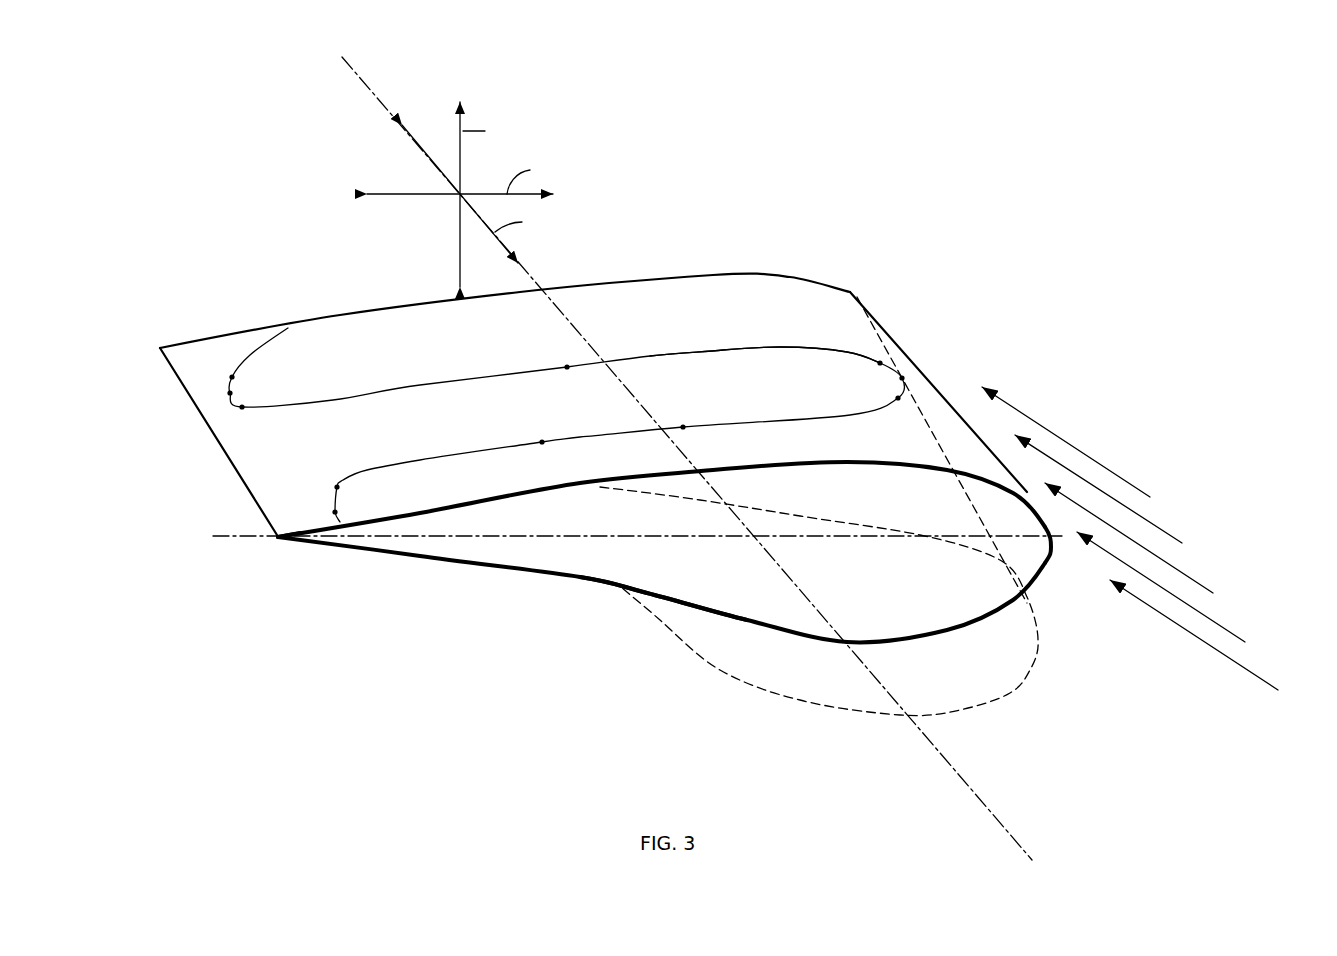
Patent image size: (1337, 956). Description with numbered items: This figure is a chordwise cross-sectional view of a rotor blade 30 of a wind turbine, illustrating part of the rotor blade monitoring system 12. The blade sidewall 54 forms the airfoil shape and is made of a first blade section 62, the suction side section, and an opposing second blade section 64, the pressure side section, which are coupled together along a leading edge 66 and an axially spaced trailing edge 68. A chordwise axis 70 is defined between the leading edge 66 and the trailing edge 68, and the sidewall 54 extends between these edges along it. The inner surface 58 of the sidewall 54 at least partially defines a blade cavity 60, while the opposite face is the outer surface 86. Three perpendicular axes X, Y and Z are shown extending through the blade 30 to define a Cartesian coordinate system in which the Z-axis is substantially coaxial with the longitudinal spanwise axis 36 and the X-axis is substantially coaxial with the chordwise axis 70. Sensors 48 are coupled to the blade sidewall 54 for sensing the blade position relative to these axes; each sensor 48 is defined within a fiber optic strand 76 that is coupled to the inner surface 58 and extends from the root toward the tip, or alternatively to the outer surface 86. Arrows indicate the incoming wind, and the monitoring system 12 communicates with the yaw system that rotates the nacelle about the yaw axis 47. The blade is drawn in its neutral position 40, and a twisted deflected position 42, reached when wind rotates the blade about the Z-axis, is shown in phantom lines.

The rotor blade monitoring system 12 is at (742, 230).
The rotor blade 30 is at (935, 140).
The longitudinal spanwise axis 36 is at (992, 813).
The neutral position 40 is at (1010, 372).
The deflected position 42 is at (1060, 693).
The yaw axis 47 is at (1193, 577).
The sensor 48 is at (567, 367).
The blade sidewall 54 is at (630, 307).
The inner surface 58 is at (897, 480).
The blade cavity 60 is at (538, 523).
The first blade section 62 is at (370, 292).
The second blade section 64 is at (618, 617).
The leading edge 66 is at (1052, 540).
The trailing edge 68 is at (277, 537).
The chordwise axis 70 is at (237, 535).
The fiber optic strand 76 is at (722, 350).
The outer surface 86 is at (830, 307).